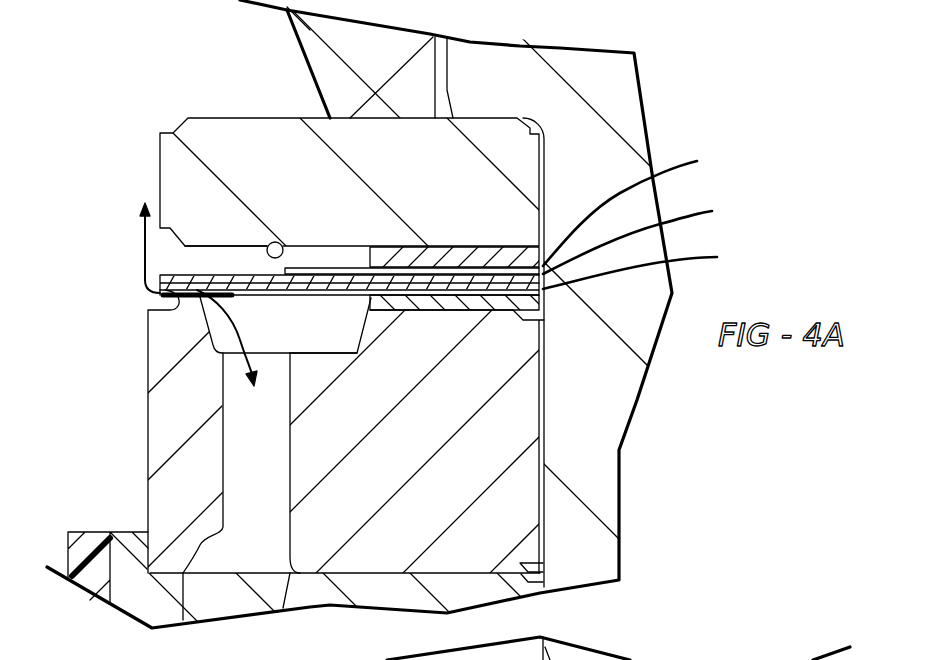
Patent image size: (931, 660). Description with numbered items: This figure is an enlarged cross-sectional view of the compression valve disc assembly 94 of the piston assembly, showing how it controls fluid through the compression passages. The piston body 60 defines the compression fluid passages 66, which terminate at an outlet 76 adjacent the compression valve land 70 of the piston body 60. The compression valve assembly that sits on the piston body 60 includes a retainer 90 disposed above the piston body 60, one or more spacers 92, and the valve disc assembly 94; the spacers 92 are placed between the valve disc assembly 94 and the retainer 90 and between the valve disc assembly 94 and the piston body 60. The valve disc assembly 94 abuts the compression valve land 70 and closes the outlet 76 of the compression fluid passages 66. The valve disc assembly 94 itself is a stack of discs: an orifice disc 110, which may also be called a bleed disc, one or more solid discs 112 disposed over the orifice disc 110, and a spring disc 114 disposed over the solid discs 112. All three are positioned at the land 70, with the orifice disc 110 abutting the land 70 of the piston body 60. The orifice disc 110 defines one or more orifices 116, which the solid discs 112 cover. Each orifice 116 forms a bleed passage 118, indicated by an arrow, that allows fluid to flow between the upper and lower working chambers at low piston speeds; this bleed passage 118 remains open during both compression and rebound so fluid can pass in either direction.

The piston body 60 is at (148, 453).
The compression fluid passages 66 is at (253, 480).
The compression valve land 70 is at (165, 290).
The outlet 76 is at (337, 335).
The retainer 90 is at (217, 133).
The spacers 92 is at (447, 255).
The compression valve disc assembly 94 is at (220, 262).
The orifice disc 110 is at (463, 271).
The solid discs 112 is at (460, 246).
The spring disc 114 is at (517, 209).
The orifice 116 is at (197, 292).
The bleed passage 118 is at (247, 336).